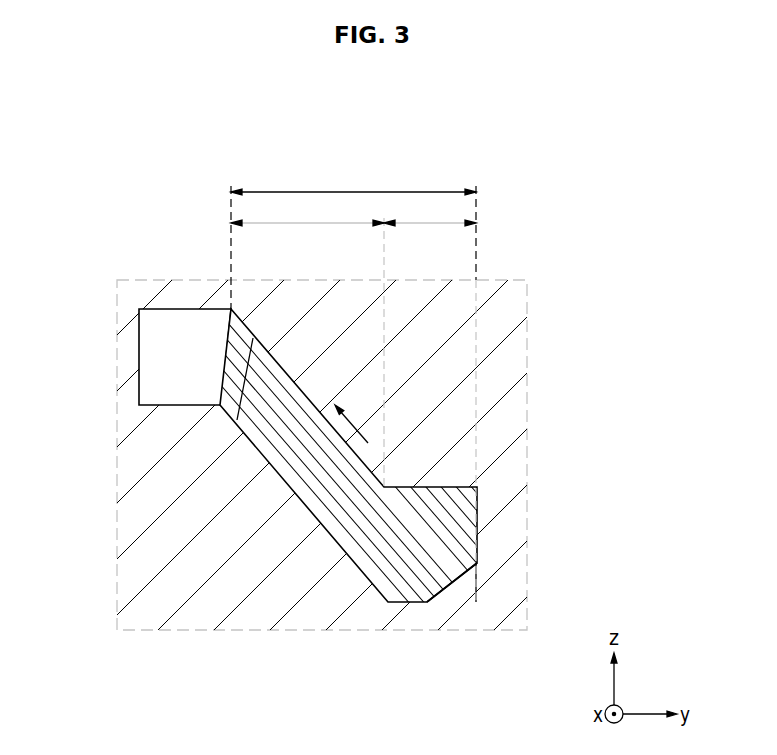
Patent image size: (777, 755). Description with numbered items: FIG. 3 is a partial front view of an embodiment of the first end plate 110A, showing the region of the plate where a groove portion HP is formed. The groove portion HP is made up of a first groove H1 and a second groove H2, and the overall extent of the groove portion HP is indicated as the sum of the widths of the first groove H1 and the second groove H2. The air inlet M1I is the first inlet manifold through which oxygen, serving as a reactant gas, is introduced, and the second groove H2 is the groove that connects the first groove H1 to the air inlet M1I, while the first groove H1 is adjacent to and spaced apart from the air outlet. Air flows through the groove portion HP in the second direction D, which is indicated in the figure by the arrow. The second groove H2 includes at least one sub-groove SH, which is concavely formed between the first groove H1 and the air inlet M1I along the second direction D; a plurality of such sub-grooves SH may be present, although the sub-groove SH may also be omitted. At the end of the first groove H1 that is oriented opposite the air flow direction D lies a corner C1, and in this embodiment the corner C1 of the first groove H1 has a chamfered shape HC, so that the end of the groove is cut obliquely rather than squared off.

The first end plate 110A is at (513, 606).
The air inlet M1I is at (197, 352).
The sub-groove SH is at (450, 536).
The chamfered shape HC is at (441, 594).
The corner C1 is at (487, 606).
The groove portion HP is at (353, 384).
The second groove H2 is at (307, 342).
The first groove H1 is at (430, 212).
The second direction D is at (350, 421).